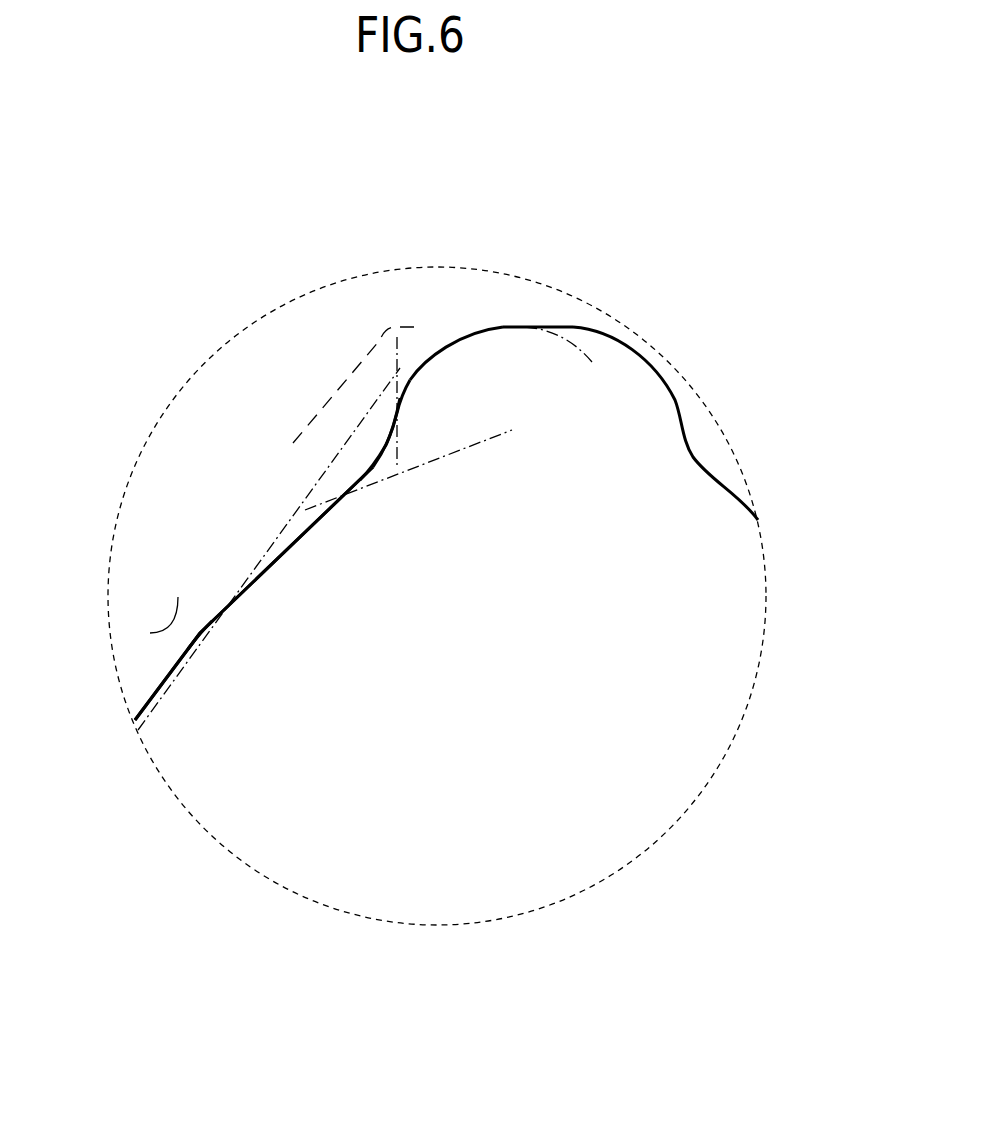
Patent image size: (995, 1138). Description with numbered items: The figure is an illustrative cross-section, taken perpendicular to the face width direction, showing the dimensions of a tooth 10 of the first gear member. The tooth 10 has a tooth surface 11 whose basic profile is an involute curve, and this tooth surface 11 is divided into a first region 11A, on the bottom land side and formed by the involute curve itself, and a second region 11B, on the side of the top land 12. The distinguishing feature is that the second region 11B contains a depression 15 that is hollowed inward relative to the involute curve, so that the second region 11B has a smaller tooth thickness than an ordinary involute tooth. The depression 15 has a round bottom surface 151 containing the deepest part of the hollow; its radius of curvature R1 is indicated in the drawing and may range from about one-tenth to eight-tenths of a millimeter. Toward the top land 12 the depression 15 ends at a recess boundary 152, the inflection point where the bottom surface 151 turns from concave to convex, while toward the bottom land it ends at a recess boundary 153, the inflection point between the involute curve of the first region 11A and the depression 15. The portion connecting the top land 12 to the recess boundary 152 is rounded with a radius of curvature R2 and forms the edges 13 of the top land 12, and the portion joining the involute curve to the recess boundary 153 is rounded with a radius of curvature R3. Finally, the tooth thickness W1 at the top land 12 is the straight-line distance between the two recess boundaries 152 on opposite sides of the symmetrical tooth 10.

The tooth 10 is at (663, 467).
The tooth surface 11 is at (213, 612).
The first region 11A is at (73, 738).
The second region 11B is at (197, 572).
The top land 12 is at (553, 327).
The edges of the top land 13 is at (458, 332).
The depression 15 is at (381, 452).
The bottom surface 151 is at (368, 480).
The recess boundary situated toward the top land 152 is at (397, 417).
The recess boundary situated toward the bottom land 153 is at (200, 633).
The radius of curvature of the bottom surface R1 is at (376, 466).
The radius of curvature of the portion connecting the top land and the recess bounda R2 is at (428, 358).
The radius of curvature of the portion connecting the involute curve and the recess R3 is at (200, 633).
The tooth thickness at the top land W1 is at (678, 182).